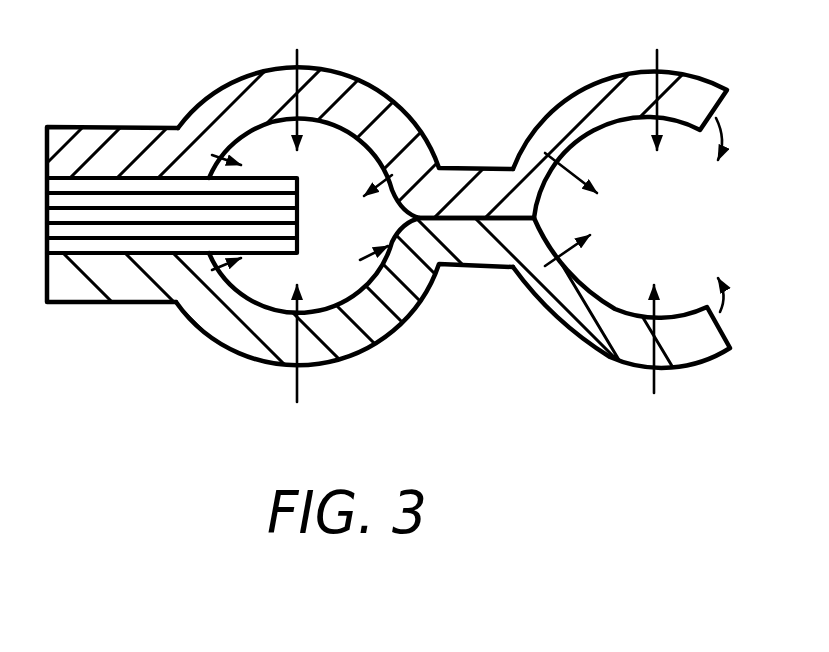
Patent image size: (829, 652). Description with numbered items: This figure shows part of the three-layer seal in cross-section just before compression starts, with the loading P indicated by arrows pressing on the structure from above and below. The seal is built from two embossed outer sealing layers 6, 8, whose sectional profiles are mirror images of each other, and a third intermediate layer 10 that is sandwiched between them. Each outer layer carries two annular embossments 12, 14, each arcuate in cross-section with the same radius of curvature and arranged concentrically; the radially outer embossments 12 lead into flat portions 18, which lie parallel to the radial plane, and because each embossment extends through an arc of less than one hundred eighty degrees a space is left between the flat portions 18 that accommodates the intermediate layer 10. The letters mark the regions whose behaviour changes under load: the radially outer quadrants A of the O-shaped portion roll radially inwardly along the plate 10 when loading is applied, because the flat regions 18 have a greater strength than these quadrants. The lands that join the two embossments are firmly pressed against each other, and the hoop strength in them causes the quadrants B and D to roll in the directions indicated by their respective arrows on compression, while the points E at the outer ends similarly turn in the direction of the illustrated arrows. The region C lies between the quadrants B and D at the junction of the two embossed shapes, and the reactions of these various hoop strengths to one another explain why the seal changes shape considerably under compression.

The outer sealing layer 6 is at (313, 68).
The outer sealing layer 8 is at (251, 347).
The intermediate layer 10 is at (108, 205).
The radially outer embossment 12 is at (265, 88).
The radially inner embossment 14 is at (600, 93).
The flat portion 18 is at (108, 272).
The loading P is at (477, 221).
The radially outer quadrant A is at (212, 160).
The quadrant B is at (404, 165).
The neck portion C is at (469, 217).
The quadrant D is at (557, 150).
The point E is at (736, 225).